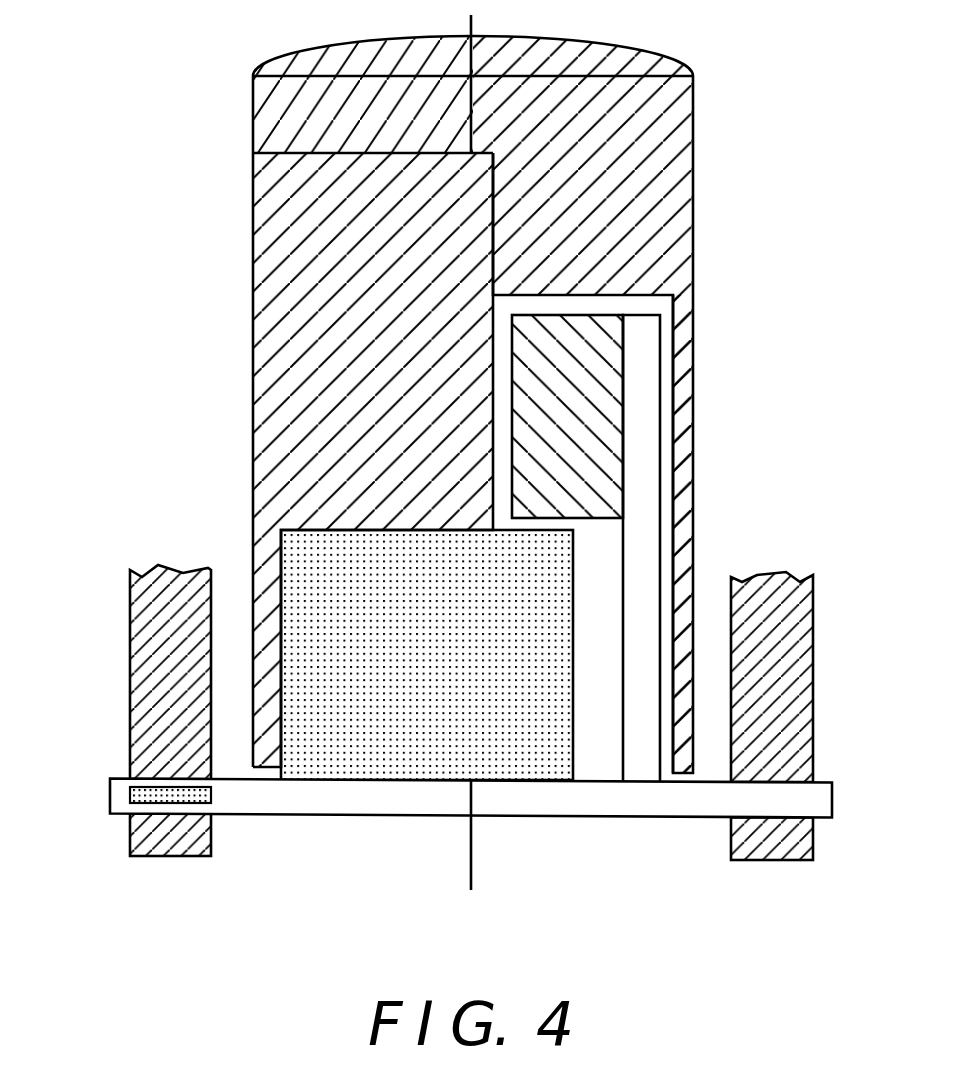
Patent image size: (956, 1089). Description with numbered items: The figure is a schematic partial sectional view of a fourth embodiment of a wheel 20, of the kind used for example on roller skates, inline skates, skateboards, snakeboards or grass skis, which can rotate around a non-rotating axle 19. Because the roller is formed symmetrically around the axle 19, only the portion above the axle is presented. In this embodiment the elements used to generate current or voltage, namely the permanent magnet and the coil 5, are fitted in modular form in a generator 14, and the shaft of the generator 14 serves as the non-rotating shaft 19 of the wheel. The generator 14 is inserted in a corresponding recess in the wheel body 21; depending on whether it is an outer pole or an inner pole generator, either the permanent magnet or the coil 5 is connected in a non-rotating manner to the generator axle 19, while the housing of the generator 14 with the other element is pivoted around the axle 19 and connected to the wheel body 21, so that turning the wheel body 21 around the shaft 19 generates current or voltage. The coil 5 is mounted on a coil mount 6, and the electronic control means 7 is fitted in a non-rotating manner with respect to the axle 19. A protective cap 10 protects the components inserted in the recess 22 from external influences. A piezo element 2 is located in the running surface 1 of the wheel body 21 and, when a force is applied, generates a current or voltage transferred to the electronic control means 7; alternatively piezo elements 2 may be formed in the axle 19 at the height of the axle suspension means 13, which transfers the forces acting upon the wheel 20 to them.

The running surface 1 is at (425, 118).
The piezo element 2 is at (140, 772).
The coil 5 is at (242, 797).
The coil mount 6 is at (647, 472).
The electronic control means 7 is at (580, 357).
The protective cap 10 is at (693, 503).
The axle suspension means 13 is at (170, 843).
The generator 14 is at (327, 572).
The non-rotating axle 19 is at (615, 800).
The wheel 20 is at (228, 232).
The wheel body 21 is at (273, 347).
The recess 22 is at (670, 405).